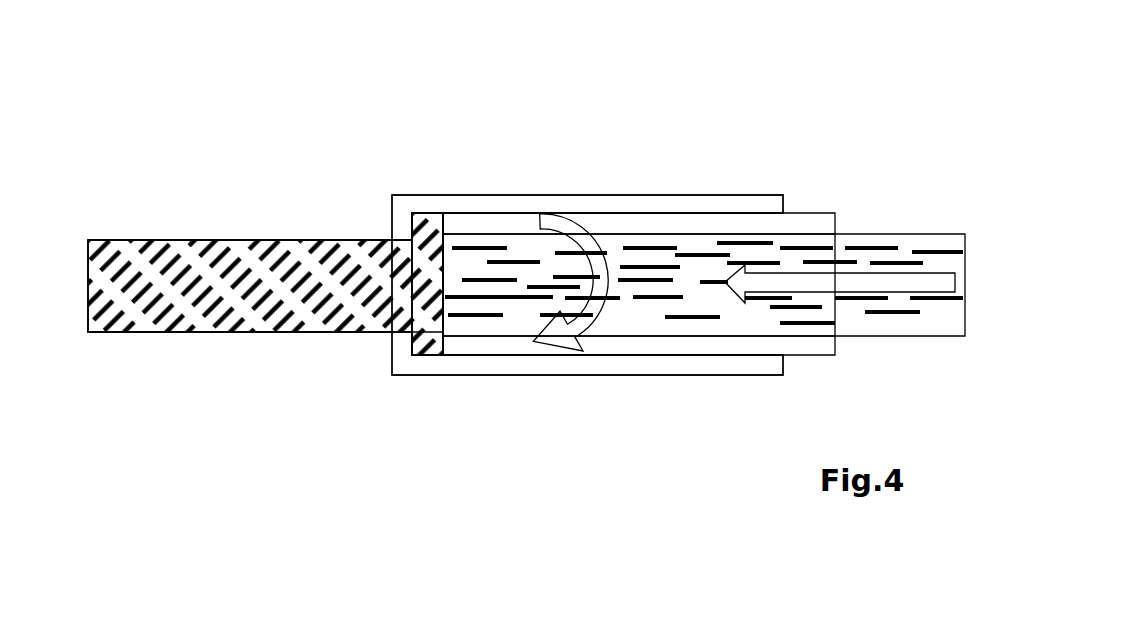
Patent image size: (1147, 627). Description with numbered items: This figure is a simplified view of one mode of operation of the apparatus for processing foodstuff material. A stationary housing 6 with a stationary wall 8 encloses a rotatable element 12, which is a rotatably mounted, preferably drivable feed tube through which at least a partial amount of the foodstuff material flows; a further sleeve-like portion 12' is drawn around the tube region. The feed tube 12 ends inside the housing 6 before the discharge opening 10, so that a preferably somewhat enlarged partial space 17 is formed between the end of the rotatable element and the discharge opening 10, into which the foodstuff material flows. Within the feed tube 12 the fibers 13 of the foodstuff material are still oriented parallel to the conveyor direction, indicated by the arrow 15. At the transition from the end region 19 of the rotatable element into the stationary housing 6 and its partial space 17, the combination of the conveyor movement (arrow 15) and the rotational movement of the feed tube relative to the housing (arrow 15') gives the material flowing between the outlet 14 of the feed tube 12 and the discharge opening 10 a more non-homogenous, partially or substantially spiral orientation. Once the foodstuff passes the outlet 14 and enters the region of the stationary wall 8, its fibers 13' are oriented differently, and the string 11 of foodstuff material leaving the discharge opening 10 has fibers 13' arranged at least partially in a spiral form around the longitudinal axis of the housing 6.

The housing 6 is at (410, 195).
The stationary wall 8 is at (433, 208).
The discharge opening 10 is at (379, 340).
The foodstuff material string 11 is at (240, 243).
The rotatable element 12 is at (614, 240).
The sleeve 12' is at (639, 233).
The fibers 13 is at (704, 348).
The fibers 13' is at (265, 247).
The outlet 14 is at (455, 287).
The arrow 15 is at (840, 221).
The arrow 15' is at (575, 225).
The partial space 17 is at (428, 358).
The end region 19 is at (459, 222).